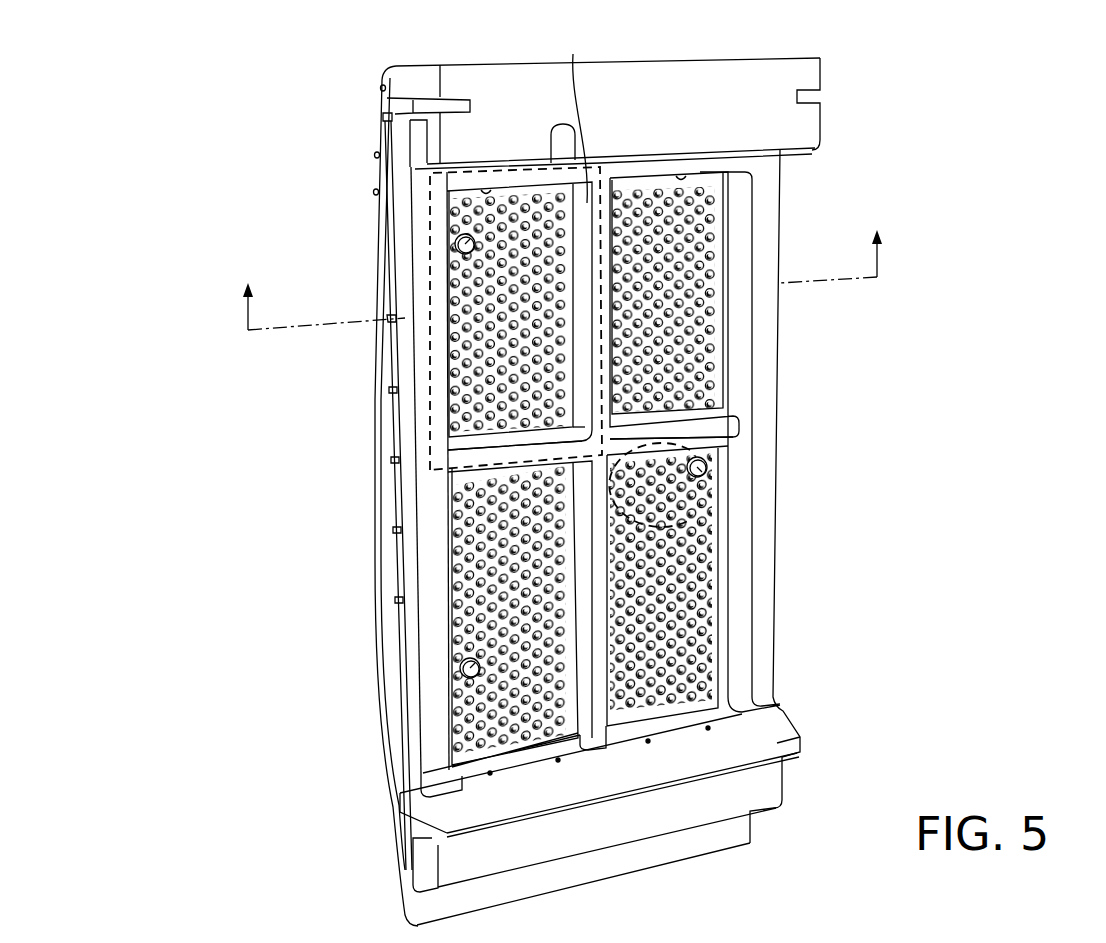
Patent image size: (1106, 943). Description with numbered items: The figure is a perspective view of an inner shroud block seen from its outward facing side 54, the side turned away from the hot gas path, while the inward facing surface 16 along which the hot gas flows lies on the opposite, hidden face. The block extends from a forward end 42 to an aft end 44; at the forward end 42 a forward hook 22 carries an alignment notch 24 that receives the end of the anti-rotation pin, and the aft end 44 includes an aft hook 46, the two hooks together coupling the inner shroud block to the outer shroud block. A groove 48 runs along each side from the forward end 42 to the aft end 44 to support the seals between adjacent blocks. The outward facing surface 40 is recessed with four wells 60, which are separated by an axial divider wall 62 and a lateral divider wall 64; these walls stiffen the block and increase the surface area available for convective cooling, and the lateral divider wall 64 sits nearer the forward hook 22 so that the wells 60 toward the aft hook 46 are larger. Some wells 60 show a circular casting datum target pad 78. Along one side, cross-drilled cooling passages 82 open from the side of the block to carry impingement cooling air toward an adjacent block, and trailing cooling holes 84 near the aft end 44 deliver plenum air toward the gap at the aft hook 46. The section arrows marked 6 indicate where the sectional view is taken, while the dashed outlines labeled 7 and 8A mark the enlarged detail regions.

The inward facing surface 16 is at (372, 100).
The cross-drilled cooling passages 82 is at (373, 192).
The casting datum target pad 78 is at (456, 252).
The section line 6 is at (561, 267).
The wells 60 is at (444, 418).
The detail region 8A is at (433, 468).
The groove 48 is at (400, 808).
The trailing cooling holes 84 is at (708, 728).
The aft end 44 is at (605, 892).
The aft hook 46 is at (770, 782).
The detail region 7 is at (675, 500).
The outward facing side 54 is at (779, 537).
The lateral divider wall 64 is at (722, 430).
The outward facing surface 40 is at (768, 207).
The forward hook 22 is at (810, 123).
The forward end 42 is at (632, 56).
The alignment notch 24 is at (567, 137).
The axial divider wall 62 is at (573, 116).